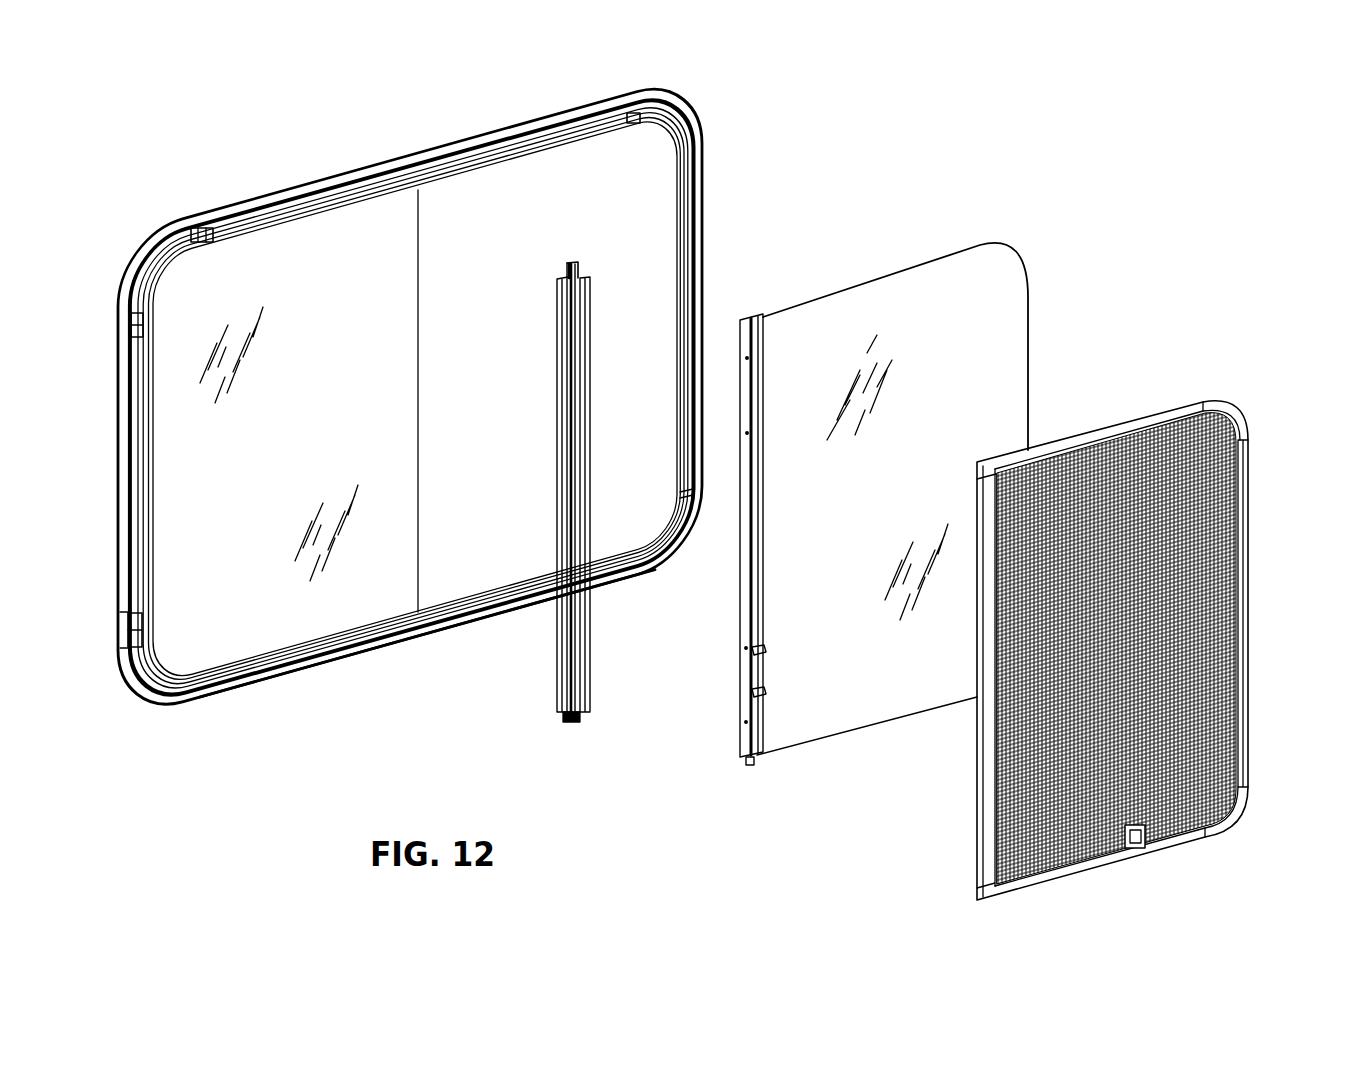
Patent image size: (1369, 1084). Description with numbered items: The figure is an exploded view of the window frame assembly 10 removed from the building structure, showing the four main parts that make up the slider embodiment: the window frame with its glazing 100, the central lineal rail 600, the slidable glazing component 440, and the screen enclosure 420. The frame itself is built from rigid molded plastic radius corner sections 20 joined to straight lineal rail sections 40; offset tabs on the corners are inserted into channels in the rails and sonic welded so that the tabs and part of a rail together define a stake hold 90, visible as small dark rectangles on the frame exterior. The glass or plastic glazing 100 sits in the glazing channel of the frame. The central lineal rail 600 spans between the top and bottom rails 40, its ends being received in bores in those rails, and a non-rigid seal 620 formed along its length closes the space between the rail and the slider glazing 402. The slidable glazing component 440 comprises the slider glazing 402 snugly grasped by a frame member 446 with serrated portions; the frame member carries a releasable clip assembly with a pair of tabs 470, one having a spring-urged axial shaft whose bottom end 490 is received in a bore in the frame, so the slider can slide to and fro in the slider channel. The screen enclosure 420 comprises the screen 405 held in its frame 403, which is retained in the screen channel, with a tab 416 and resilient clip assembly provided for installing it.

The window frame assembly 10 is at (150, 193).
The corner section 20 is at (712, 126).
The lineal rail section 40 is at (296, 688).
The stake hold 90 is at (125, 612).
The glazing 100 is at (317, 442).
The central lineal rail 600 is at (562, 403).
The non-rigid seal 620 is at (587, 272).
The slider glazing 402 is at (925, 492).
The slidable glazing component 440 is at (976, 229).
The frame member 446 is at (738, 714).
The tabs 470 is at (752, 692).
The bottom end 490 is at (751, 767).
The screen frame 403 is at (984, 815).
The screen 405 is at (1247, 678).
The tab 416 is at (1170, 838).
The screen enclosure 420 is at (1197, 390).